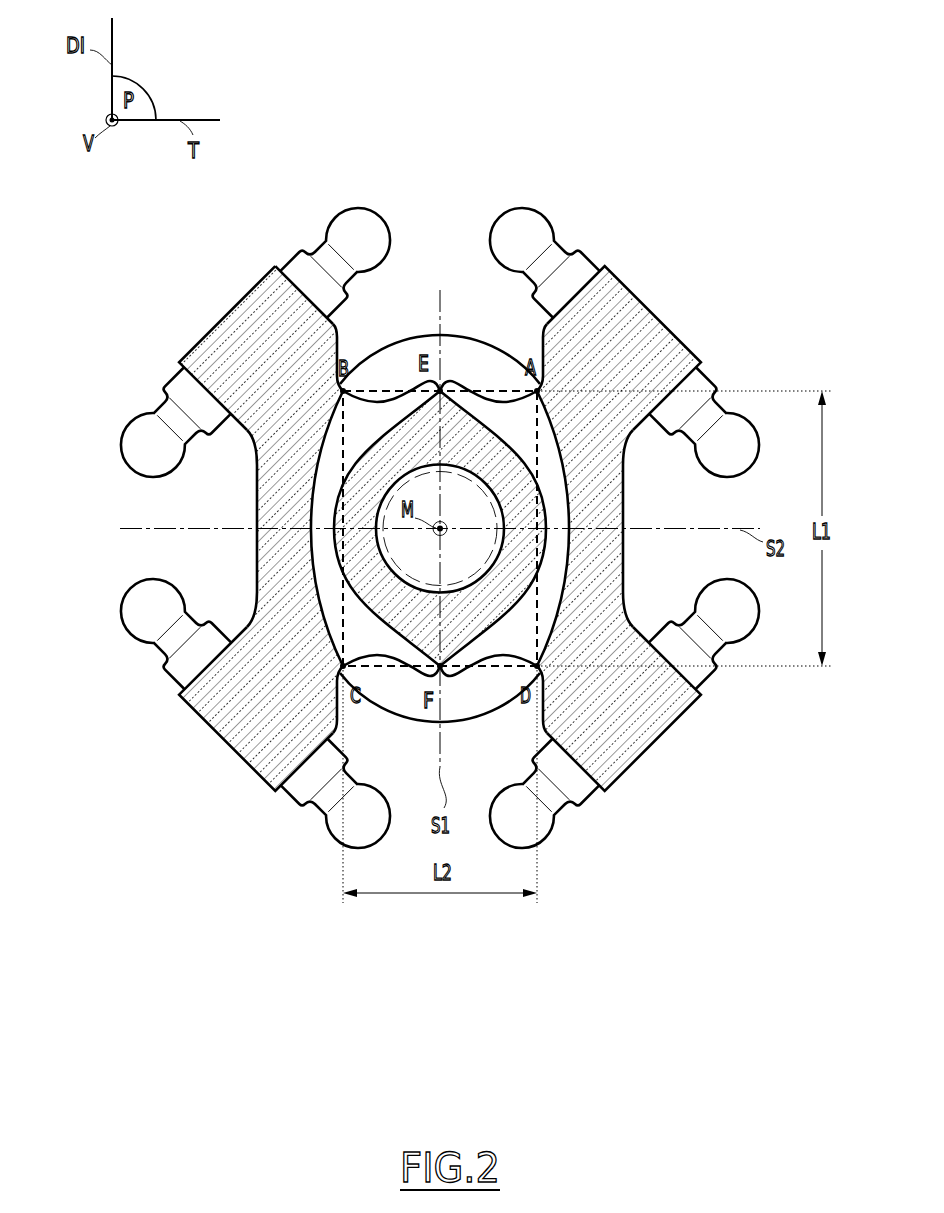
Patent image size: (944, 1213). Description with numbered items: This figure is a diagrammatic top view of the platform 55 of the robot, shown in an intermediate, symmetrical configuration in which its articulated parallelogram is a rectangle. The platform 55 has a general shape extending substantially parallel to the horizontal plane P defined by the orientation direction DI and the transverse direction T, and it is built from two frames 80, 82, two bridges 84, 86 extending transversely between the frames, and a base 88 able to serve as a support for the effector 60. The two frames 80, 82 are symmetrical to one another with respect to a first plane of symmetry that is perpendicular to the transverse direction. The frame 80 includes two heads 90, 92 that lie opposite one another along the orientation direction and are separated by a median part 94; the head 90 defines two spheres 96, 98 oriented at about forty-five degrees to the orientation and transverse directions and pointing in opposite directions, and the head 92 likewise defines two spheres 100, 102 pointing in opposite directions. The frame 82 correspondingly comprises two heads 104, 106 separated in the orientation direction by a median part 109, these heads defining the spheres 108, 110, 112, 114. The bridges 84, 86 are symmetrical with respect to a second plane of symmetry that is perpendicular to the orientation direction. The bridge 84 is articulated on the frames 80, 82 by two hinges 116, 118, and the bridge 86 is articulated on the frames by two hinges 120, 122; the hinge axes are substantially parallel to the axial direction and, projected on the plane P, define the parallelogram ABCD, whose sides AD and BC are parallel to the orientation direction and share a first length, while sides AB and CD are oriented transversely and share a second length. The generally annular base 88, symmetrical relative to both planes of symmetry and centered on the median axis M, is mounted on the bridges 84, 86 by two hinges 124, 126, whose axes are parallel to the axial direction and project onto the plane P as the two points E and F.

The platform 55 is at (681, 184).
The effector 60 is at (503, 503).
The frame 80 is at (667, 320).
The frame 82 is at (228, 325).
The bridge 84 is at (465, 352).
The bridge 86 is at (395, 690).
The base 88 is at (357, 479).
The head 90 is at (630, 292).
The head 92 is at (635, 752).
The median part 94 is at (607, 558).
The sphere 96 is at (530, 222).
The sphere 98 is at (745, 456).
The sphere 100 is at (542, 833).
The sphere 102 is at (748, 628).
The head 104 is at (270, 277).
The head 106 is at (245, 752).
The sphere 108 is at (349, 232).
The median part 109 is at (275, 557).
The sphere 110 is at (142, 430).
The sphere 112 is at (352, 840).
The sphere 114 is at (136, 628).
The hinge 116 is at (539, 392).
The hinge 118 is at (344, 389).
The hinge 120 is at (536, 665).
The hinge 122 is at (344, 665).
The hinge 124 is at (440, 388).
The hinge 126 is at (442, 670).